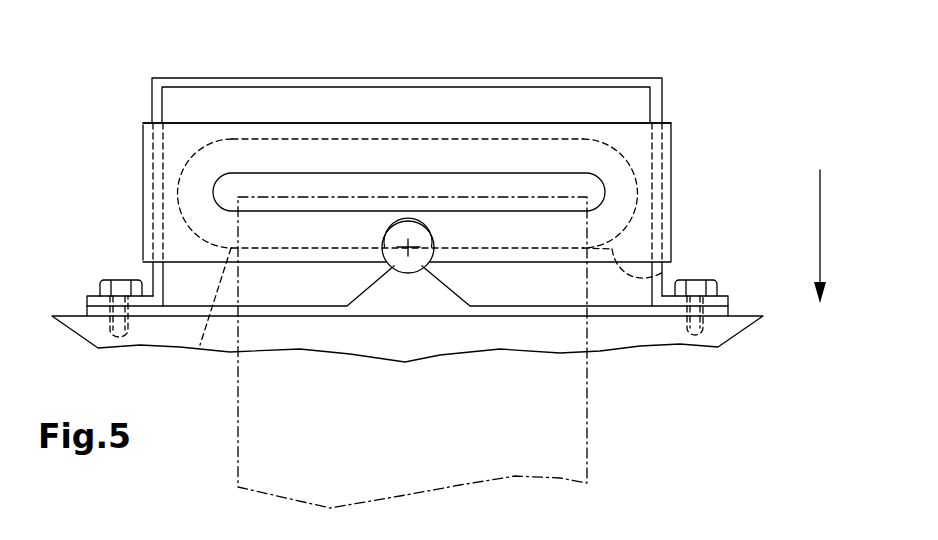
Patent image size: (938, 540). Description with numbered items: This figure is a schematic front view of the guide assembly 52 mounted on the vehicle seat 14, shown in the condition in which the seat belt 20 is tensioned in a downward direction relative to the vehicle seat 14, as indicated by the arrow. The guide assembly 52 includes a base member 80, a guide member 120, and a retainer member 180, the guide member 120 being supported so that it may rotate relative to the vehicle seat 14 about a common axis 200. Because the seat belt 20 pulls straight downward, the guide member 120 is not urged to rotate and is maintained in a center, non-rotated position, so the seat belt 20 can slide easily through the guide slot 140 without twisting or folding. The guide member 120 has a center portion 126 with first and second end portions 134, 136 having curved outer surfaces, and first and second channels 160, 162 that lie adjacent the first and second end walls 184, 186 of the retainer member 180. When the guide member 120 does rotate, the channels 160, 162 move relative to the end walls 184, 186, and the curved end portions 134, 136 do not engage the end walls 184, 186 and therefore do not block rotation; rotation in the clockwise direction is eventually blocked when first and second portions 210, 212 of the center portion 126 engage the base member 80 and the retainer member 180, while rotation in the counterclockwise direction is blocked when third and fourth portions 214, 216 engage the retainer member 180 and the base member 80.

The vehicle seat 14 is at (664, 330).
The seat belt 20 is at (556, 418).
The guide assembly 52 is at (122, 70).
The base member 80 is at (333, 316).
The guide member 120 is at (483, 157).
The center portion 126 is at (370, 138).
The first end portion 134 is at (600, 243).
The second end portion 136 is at (190, 232).
The guide slot 140 is at (539, 183).
The first channel 160 is at (694, 166).
The second channel 162 is at (128, 174).
The retainer member 180 is at (280, 87).
The first end wall 184 is at (656, 108).
The second end wall 186 is at (160, 108).
The common axis 200 is at (408, 252).
The first portion 210 is at (663, 272).
The second portion 212 is at (230, 138).
The third portion 214 is at (598, 138).
The fourth portion 216 is at (200, 345).